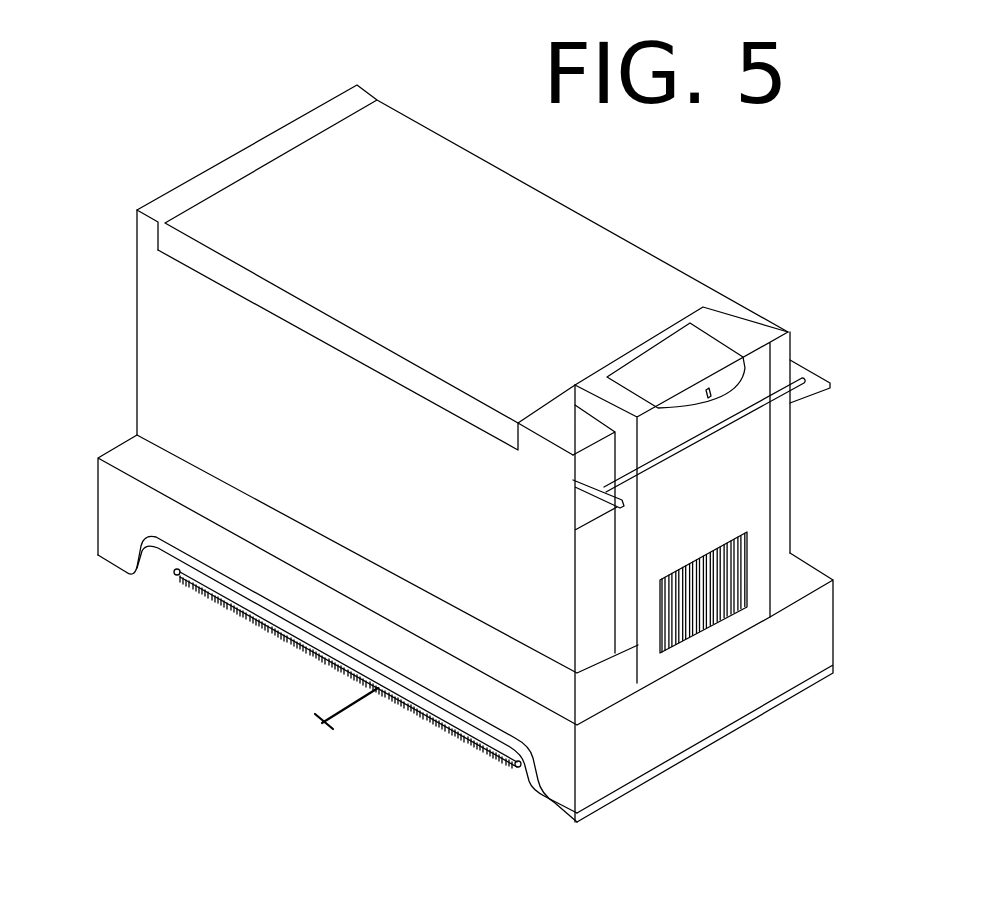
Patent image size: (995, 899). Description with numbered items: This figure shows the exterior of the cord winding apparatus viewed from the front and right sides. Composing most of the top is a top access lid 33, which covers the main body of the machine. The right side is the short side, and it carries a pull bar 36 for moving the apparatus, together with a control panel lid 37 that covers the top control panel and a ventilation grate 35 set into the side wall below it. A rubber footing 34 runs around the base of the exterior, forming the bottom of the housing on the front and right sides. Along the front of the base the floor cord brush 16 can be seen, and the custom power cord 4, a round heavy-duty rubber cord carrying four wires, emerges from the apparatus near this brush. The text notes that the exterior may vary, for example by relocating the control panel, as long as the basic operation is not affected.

The custom power cord 4 is at (352, 707).
The floor cord brush 16 is at (240, 610).
The top access lid 33 is at (273, 207).
The rubber footing 34 is at (115, 569).
The ventilation grate 35 is at (727, 558).
The pull bar 36 is at (737, 420).
The control panel lid 37 is at (700, 350).